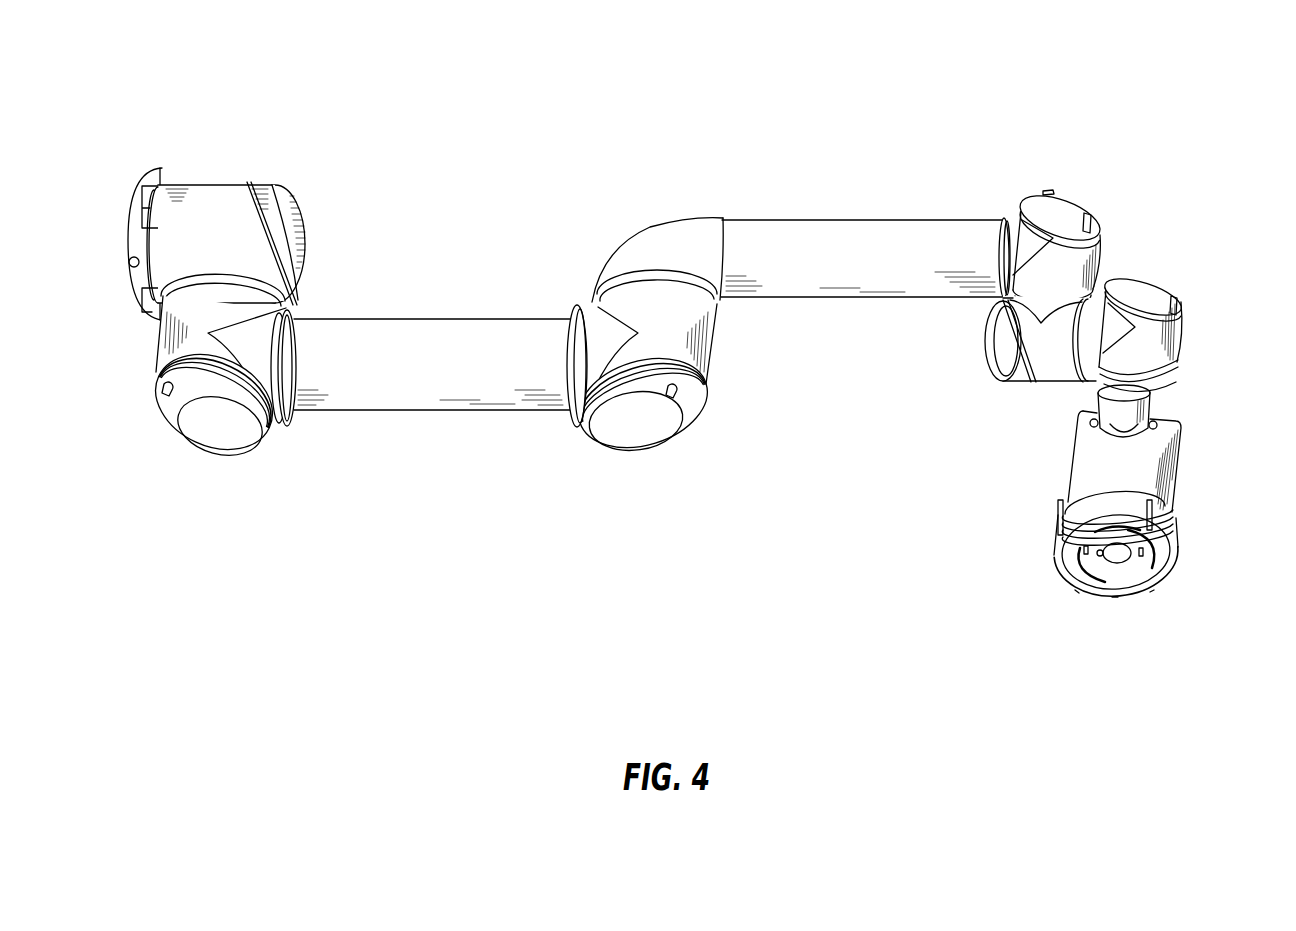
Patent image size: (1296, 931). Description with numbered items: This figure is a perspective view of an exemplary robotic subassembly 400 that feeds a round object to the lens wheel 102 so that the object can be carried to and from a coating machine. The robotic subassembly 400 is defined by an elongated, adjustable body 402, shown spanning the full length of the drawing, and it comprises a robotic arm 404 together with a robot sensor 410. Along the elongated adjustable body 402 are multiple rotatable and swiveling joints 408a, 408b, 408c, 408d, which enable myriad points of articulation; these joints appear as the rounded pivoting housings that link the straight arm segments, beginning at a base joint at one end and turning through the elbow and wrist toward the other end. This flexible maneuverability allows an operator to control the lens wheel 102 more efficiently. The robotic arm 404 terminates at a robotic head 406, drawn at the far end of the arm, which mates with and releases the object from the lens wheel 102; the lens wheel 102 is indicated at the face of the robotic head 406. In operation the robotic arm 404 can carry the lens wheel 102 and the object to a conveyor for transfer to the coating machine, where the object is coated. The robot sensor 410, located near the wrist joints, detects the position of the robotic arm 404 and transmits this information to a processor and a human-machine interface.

The robotic subassembly 400 is at (179, 76).
The elongated, adjustable body 402 is at (1186, 628).
The robotic arm 404 is at (836, 220).
The robotic head 406 is at (1184, 481).
The joint 408a is at (213, 434).
The joint 408b is at (294, 230).
The joint 408c is at (641, 438).
The joint 408d is at (985, 338).
The robot sensor 410 is at (1068, 194).
The lens wheel 102 is at (1195, 556).